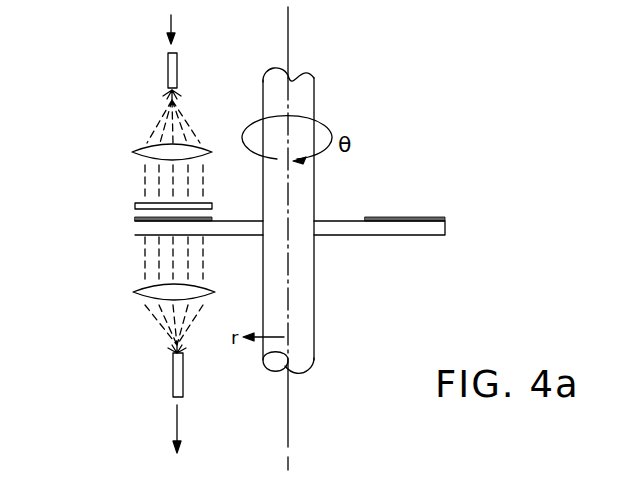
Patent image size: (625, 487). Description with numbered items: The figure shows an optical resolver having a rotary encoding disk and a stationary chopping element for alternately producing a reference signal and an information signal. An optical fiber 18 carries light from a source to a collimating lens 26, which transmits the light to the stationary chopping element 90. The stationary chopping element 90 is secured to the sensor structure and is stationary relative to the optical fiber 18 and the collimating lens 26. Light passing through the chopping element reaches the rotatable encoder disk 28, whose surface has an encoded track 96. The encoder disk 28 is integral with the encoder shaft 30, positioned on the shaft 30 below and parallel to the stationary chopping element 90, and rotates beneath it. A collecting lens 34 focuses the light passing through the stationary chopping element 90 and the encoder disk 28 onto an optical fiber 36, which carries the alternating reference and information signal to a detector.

The optical fiber 18 is at (167, 68).
The collimating lens 26 is at (145, 151).
The stationary chopping element 90 is at (137, 202).
The encoded track 96 is at (137, 217).
The encoder disk 28 is at (407, 236).
The encoder shaft 30 is at (314, 306).
The collecting lens 34 is at (143, 290).
The optical fiber 36 is at (170, 368).